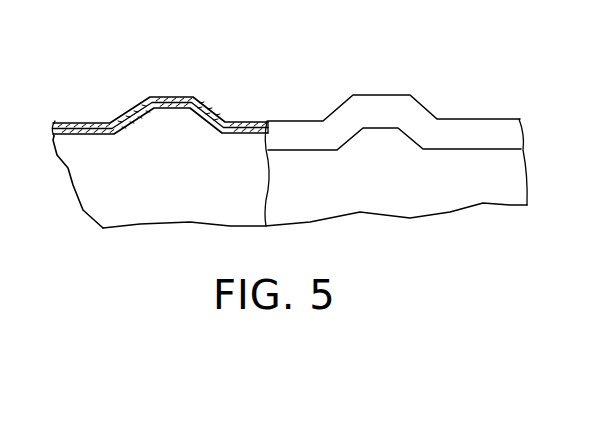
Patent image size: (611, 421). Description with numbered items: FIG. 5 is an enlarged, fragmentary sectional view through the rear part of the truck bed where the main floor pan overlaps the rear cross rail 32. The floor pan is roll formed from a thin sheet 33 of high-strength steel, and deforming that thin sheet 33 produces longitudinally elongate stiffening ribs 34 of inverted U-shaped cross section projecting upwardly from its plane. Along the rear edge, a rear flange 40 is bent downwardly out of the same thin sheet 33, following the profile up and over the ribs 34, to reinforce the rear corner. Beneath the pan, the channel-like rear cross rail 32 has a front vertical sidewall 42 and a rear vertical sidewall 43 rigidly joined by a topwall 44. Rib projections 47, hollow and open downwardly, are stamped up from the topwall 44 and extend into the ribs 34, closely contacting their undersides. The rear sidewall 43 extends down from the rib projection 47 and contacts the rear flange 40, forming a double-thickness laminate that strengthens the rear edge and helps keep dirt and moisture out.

The rear cross rail 32 is at (193, 228).
The thin sheet 33 is at (251, 119).
The stiffening ribs 34 is at (157, 95).
The rear flange 40 is at (437, 136).
The front vertical sidewall 42 is at (112, 220).
The rear vertical sidewall 43 is at (398, 205).
The topwall 44 is at (91, 136).
The rib projections 47 is at (178, 110).